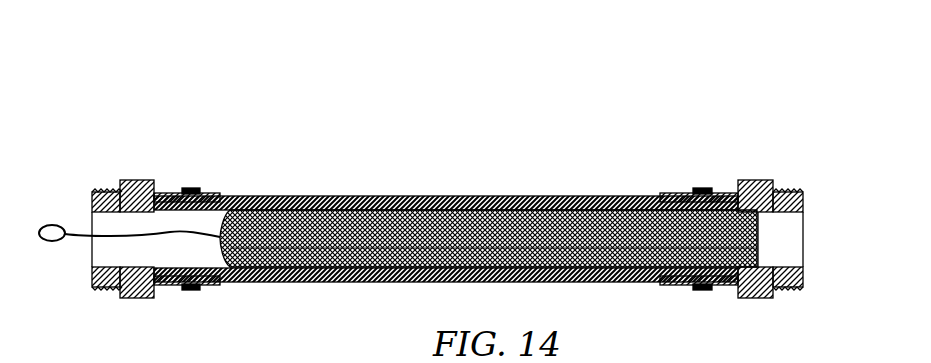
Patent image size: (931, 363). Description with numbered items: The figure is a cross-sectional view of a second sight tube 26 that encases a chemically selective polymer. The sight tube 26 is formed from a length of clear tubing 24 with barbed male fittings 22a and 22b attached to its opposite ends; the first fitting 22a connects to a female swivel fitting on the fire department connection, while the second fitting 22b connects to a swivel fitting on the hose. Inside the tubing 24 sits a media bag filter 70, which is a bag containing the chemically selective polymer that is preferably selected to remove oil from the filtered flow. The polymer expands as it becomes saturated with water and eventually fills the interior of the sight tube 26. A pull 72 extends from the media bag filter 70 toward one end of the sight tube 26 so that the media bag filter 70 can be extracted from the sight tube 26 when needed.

The second sight tube 26 is at (543, 90).
The first fitting 22a is at (760, 179).
The second fitting 22b is at (134, 179).
The tubing 24 is at (558, 193).
The media bag filter 70 is at (325, 210).
The pull 72 is at (80, 231).